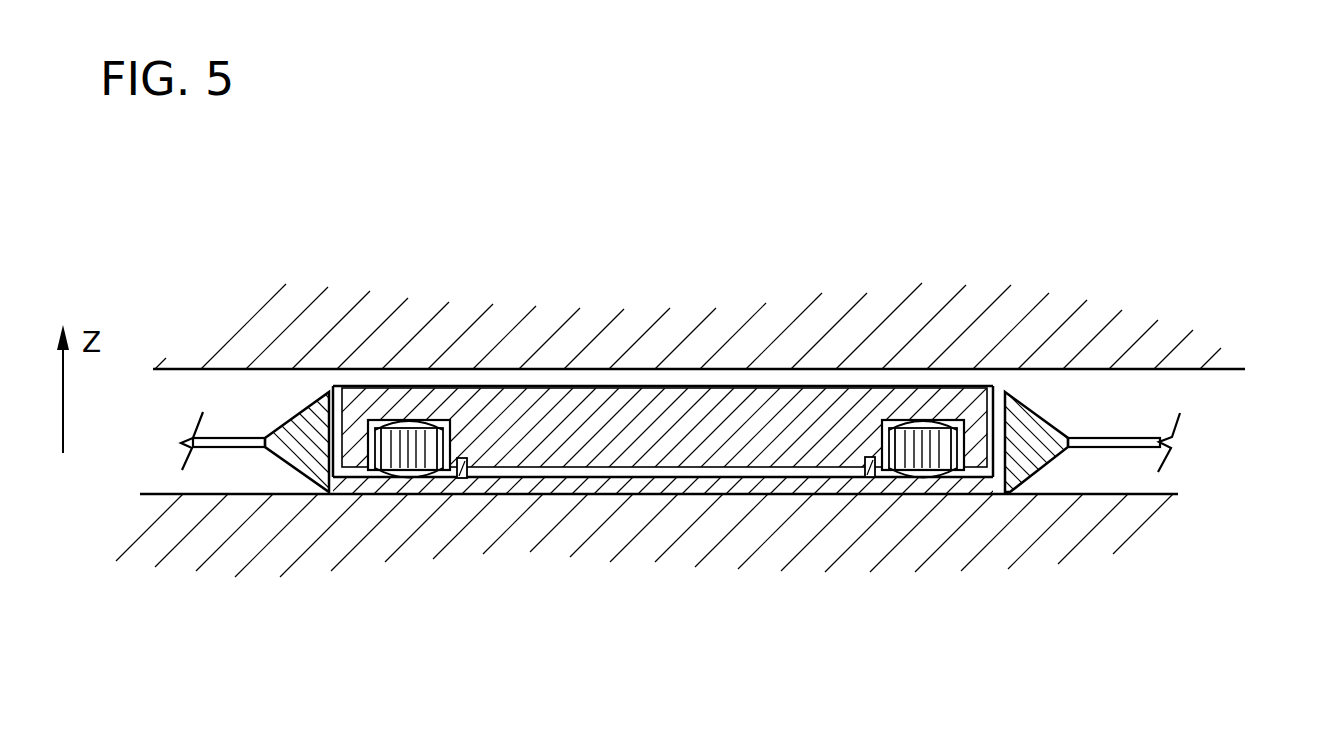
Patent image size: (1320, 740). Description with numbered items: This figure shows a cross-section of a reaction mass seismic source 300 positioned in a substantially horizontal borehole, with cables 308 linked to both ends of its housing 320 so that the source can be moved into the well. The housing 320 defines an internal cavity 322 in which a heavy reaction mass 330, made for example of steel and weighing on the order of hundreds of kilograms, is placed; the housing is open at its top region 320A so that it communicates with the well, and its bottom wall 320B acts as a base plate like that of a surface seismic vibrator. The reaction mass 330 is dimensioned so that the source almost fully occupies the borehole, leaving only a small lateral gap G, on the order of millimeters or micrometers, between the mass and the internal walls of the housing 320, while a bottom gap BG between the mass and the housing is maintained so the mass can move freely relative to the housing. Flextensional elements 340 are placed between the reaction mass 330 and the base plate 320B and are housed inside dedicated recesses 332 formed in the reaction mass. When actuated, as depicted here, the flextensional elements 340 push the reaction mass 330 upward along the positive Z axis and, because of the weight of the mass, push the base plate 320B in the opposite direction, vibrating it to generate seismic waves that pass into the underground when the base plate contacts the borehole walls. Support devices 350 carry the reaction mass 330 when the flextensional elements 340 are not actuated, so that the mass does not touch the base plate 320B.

The source 300 is at (775, 167).
The cables 308 is at (227, 447).
The housing 320 is at (1042, 417).
The top region 320A is at (452, 372).
The base plate 320B is at (547, 487).
The internal cavity 322 is at (335, 403).
The reaction mass 330 is at (683, 448).
The recesses 332 is at (895, 420).
The flextensional elements 340 is at (397, 472).
The support devices 350 is at (462, 478).
The bottom gap BG is at (717, 478).
The lateral gap G is at (1000, 447).